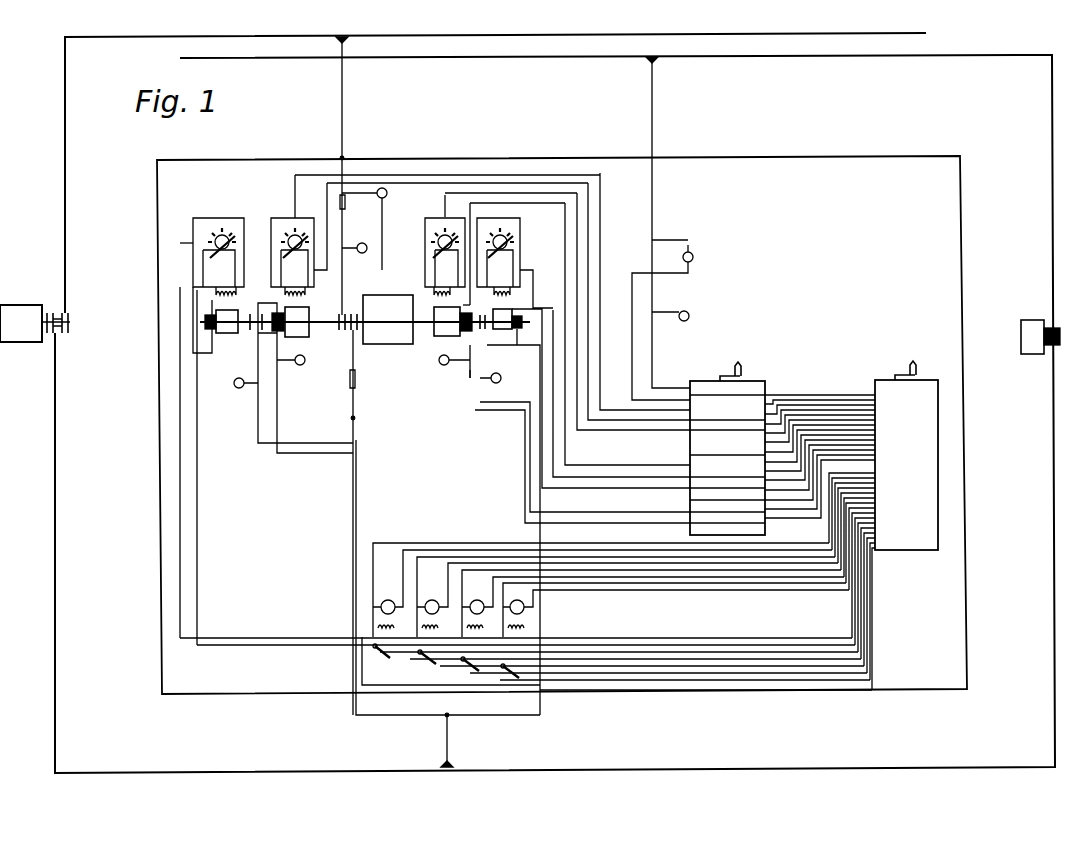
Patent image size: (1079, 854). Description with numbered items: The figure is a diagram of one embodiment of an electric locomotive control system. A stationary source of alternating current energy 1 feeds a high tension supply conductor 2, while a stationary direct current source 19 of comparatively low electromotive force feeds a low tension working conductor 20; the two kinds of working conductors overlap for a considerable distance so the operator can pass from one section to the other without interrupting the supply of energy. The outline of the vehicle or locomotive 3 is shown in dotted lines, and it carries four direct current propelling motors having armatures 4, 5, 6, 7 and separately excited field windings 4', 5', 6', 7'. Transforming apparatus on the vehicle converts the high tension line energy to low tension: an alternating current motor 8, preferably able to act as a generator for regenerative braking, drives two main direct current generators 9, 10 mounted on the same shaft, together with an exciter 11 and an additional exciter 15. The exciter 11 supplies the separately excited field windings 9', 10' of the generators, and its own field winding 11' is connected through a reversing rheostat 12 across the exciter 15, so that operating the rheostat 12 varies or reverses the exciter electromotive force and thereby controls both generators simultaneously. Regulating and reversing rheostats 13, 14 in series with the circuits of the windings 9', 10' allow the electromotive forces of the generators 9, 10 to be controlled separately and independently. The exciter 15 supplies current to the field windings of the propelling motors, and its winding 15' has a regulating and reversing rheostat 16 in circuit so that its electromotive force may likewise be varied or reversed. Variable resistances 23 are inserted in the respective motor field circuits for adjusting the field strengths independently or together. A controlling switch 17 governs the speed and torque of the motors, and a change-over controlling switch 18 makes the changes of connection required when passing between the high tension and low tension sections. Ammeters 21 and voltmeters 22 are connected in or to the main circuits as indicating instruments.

The source of alternating current energy 1 is at (35, 323).
The high tension supply conductor 2 is at (214, 770).
The vehicle or locomotive outline 3 is at (157, 193).
The propelling motor armature 4 is at (602, 590).
The propelling motor armature 5 is at (627, 597).
The propelling motor armature 6 is at (653, 603).
The propelling motor armature 7 is at (676, 609).
The separately excited field winding 4' is at (379, 628).
The separately excited field winding 5' is at (423, 628).
The separately excited field winding 6' is at (468, 628).
The separately excited field winding 7' is at (510, 628).
The alternating current motor 8 is at (388, 319).
The main direct current generator 9 is at (453, 320).
The main direct current generator 10 is at (305, 378).
The exciter 11 is at (582, 512).
The reversing rheostat 12 is at (509, 252).
The regulating and reversing rheostat 13 is at (434, 252).
The regulating and reversing rheostat 14 is at (292, 252).
The exciter 15 is at (209, 466).
The regulating and reversing rheostat 16 is at (212, 252).
The separately excited field winding 9' is at (449, 295).
The separately excited field winding 10' is at (306, 295).
The field winding 11' is at (513, 295).
The exciter winding 15' is at (237, 295).
The controlling switch 17 is at (883, 525).
The change-over controlling switch 18 is at (782, 448).
The stationary direct current source 19 is at (1040, 337).
The low tension working conductor 20 is at (712, 60).
The ammeter 21 is at (493, 306).
The voltmeter 22 is at (469, 295).
The variable resistance 23 is at (442, 666).